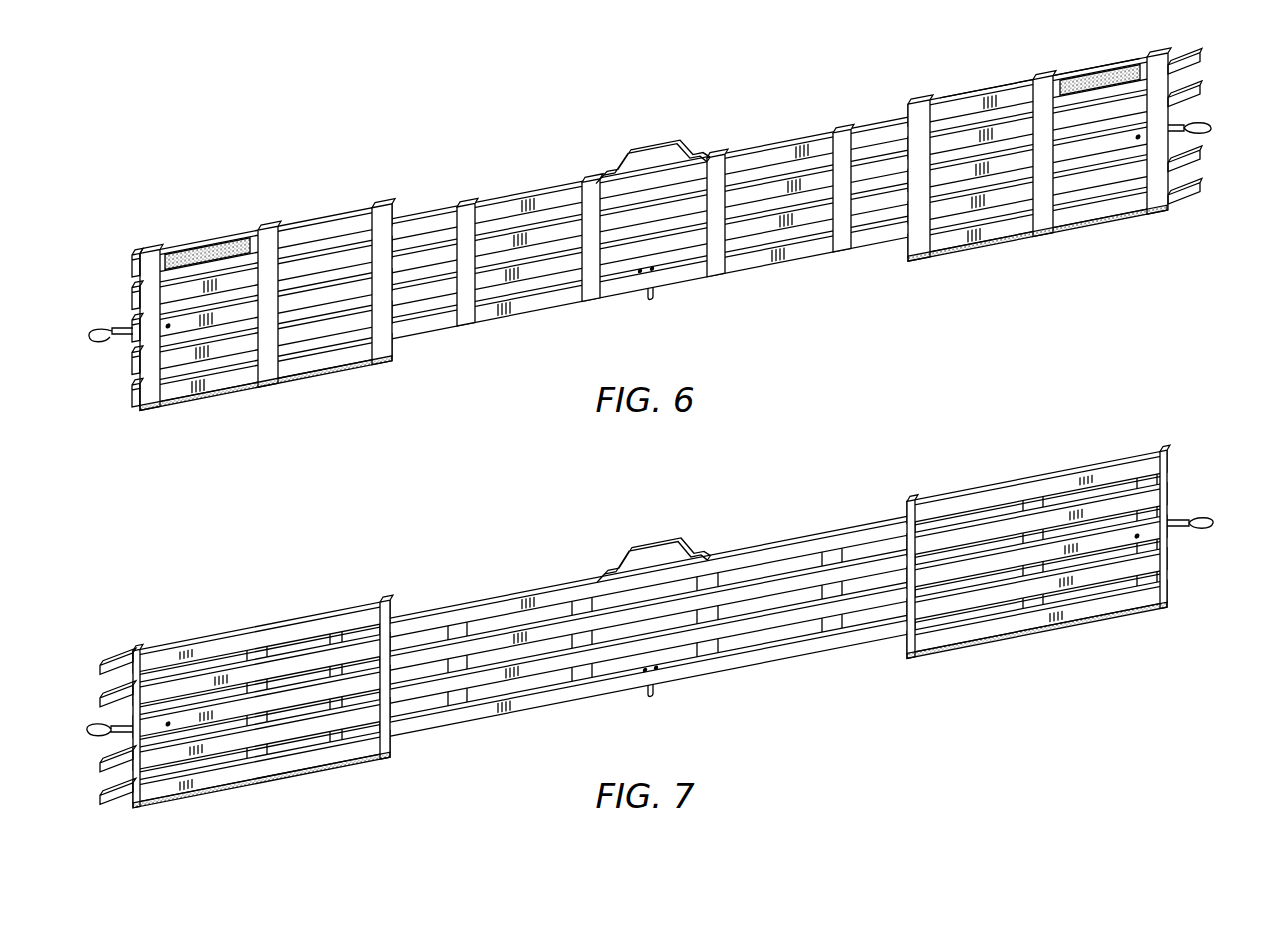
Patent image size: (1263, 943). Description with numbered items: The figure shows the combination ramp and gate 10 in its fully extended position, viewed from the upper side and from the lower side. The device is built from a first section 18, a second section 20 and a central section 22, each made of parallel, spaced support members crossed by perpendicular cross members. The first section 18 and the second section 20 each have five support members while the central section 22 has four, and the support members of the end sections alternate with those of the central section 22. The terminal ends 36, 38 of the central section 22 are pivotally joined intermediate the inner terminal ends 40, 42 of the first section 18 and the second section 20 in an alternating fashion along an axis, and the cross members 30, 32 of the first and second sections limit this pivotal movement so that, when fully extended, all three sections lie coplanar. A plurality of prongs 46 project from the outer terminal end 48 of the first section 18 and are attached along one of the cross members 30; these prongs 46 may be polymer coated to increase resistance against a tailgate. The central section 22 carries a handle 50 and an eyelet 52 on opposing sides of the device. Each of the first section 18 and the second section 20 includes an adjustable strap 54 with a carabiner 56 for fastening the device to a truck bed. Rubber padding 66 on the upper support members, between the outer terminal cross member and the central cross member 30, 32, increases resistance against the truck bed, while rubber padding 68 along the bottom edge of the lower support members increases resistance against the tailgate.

In FIG. 6, the combination ramp and gate 10 is at (198, 135).
In FIG. 7, the combination ramp and gate 10 is at (1005, 738).
In FIG. 6, the first section 18 is at (1098, 278).
In FIG. 7, the first section 18 is at (247, 590).
In FIG. 6, the second section 20 is at (207, 440).
In FIG. 7, the second section 20 is at (1048, 432).
In FIG. 6, the central section 22 is at (518, 145).
In FIG. 7, the central section 22 is at (518, 545).
In FIG. 6, the cross members of the first section 30 is at (385, 330).
In FIG. 6, the cross members of the second section 32 is at (935, 230).
In FIG. 6, the terminal end of the central section 36 is at (410, 232).
In FIG. 6, the terminal end of the central section 38 is at (897, 130).
In FIG. 6, the inner terminal end of the first section 40 is at (355, 213).
In FIG. 6, the inner terminal end of the second section 42 is at (945, 102).
In FIG. 6, the prongs 46 is at (1190, 50).
In FIG. 7, the prongs 46 is at (105, 660).
In FIG. 6, the outer terminal end 48 is at (1142, 62).
In FIG. 7, the outer terminal end 48 is at (160, 660).
In FIG. 6, the handle 50 is at (660, 150).
In FIG. 7, the handle 50 is at (665, 548).
In FIG. 6, the eyelet 52 is at (655, 296).
In FIG. 7, the eyelet 52 is at (655, 695).
In FIG. 6, the adjustable strap 54 is at (120, 340).
In FIG. 7, the adjustable strap 54 is at (130, 725).
In FIG. 6, the carabiner 56 is at (95, 333).
In FIG. 7, the carabiner 56 is at (90, 742).
In FIG. 6, the rubber padding 66 is at (215, 250).
In FIG. 6, the rubber padding 68 is at (315, 385).
In FIG. 7, the rubber padding 68 is at (325, 775).